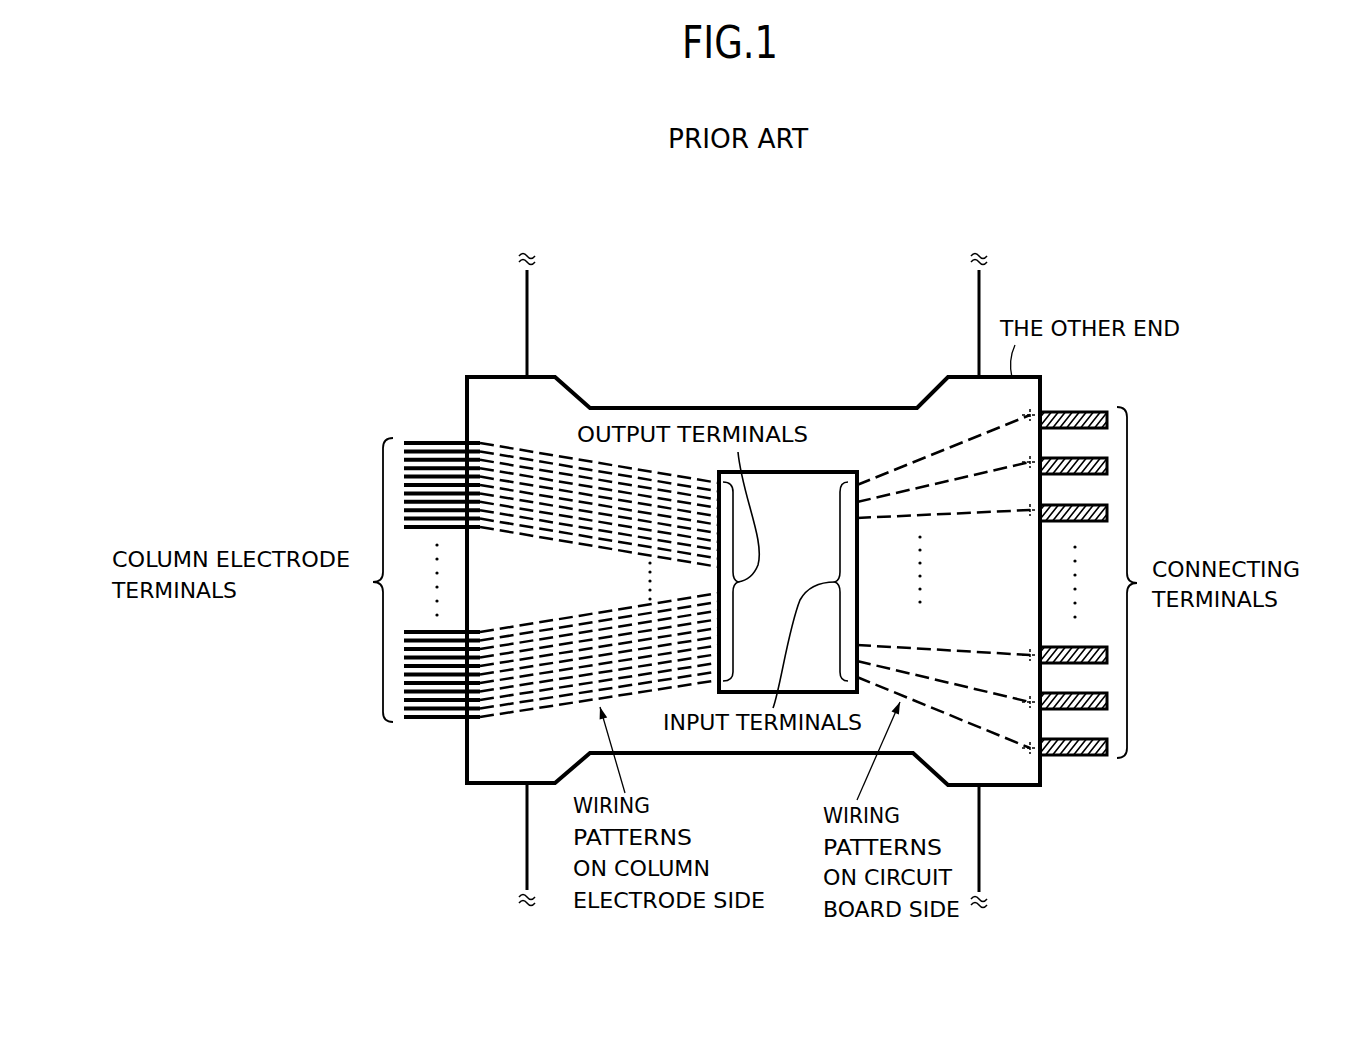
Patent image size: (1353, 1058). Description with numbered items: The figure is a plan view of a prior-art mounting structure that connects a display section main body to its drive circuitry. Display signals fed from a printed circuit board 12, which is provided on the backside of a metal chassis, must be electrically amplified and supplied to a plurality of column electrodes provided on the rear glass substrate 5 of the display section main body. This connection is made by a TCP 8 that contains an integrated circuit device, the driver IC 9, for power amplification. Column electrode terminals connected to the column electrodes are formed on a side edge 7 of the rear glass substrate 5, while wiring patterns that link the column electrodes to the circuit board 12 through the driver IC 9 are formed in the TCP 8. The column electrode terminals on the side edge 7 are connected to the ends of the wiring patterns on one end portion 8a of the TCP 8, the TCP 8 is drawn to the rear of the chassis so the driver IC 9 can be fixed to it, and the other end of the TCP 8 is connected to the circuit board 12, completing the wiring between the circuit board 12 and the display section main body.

The rear glass substrate 5 is at (528, 322).
The side edge 7 is at (435, 437).
The TCP 8 is at (663, 408).
The end portion 8a is at (497, 377).
The driver IC 9 is at (822, 471).
The circuit board 12 is at (980, 340).